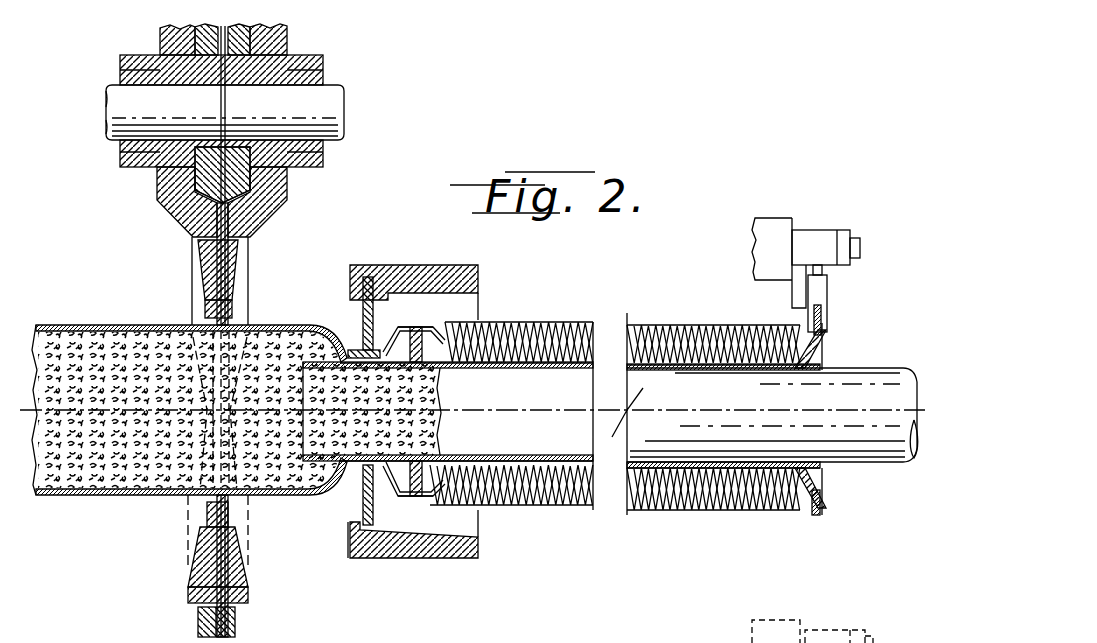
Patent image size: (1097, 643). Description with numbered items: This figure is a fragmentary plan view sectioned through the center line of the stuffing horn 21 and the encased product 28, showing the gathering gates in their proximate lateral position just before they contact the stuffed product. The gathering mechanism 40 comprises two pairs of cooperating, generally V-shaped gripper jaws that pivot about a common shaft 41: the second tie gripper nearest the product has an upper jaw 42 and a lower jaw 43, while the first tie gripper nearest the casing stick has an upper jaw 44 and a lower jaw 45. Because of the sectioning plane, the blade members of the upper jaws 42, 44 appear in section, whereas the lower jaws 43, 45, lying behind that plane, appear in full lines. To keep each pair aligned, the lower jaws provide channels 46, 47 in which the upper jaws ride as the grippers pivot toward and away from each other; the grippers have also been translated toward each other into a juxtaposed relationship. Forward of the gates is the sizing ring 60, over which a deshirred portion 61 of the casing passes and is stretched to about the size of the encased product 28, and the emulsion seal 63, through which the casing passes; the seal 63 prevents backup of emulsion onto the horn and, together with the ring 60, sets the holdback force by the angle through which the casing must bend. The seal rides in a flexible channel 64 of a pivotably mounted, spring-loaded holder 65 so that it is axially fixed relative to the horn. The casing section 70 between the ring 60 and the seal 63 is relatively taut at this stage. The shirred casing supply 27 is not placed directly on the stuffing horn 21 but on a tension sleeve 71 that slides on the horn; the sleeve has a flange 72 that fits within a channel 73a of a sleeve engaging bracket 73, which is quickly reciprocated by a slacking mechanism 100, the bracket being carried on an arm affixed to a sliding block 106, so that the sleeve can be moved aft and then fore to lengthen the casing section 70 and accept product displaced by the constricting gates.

The stuffing horn 21 is at (441, 413).
The shirred casing supply 27 is at (643, 322).
The encased product 28 is at (100, 325).
The gathering mechanism 40 is at (350, 47).
The common shaft 41 is at (327, 110).
The upper jaw 42 is at (195, 303).
The lower jaw 43 is at (232, 213).
The upper jaw 44 is at (245, 303).
The lower jaw 45 is at (208, 222).
The channel 46 is at (207, 623).
The channel 47 is at (235, 625).
The sizing ring 60 is at (412, 330).
The deshirred portion of the casing 61 is at (420, 333).
The emulsion seal 63 is at (357, 357).
The flexible channel 64 is at (363, 540).
The holder 65 is at (415, 558).
The casing section 70 is at (384, 268).
The tension sleeve 71 is at (508, 455).
The flange 72 is at (817, 342).
The sleeve engaging bracket 73 is at (827, 300).
The channel 73a is at (800, 320).
The slacking mechanism 100 is at (826, 212).
The sliding block 106 is at (771, 225).